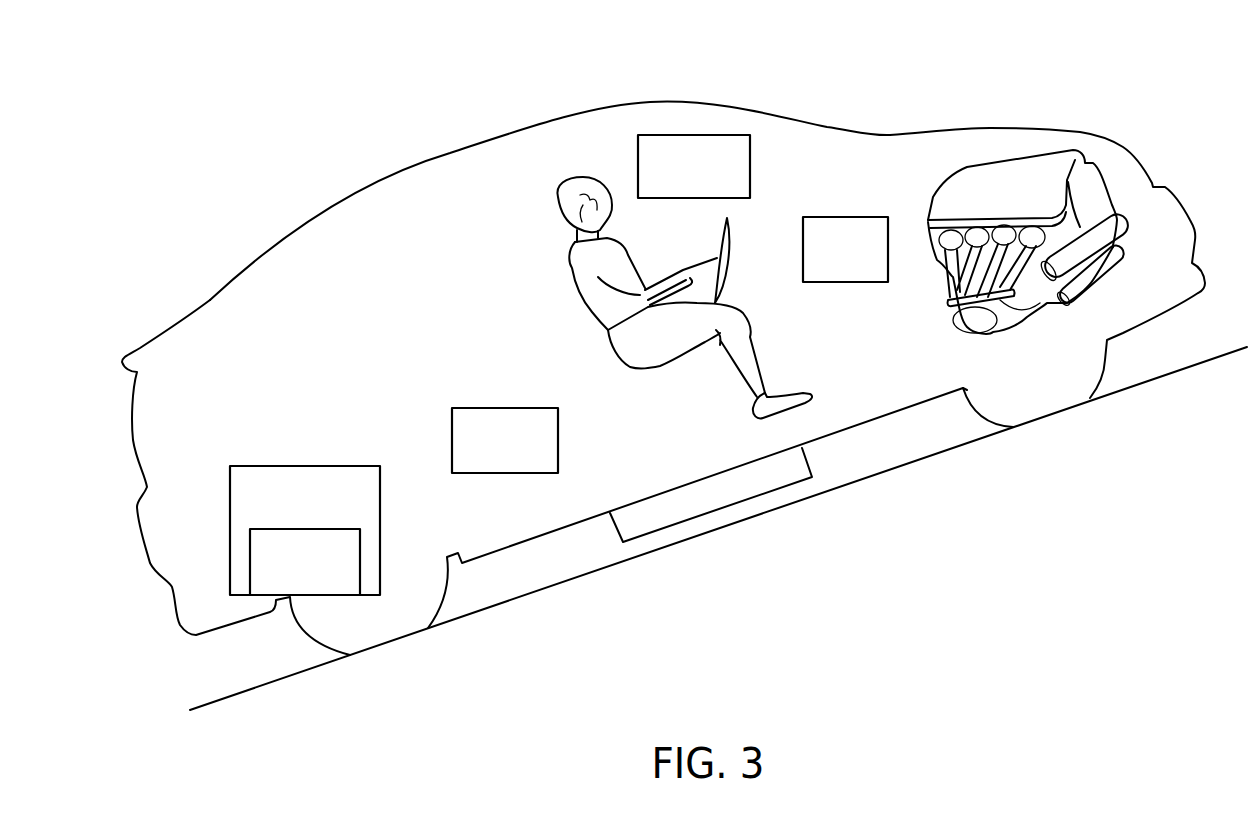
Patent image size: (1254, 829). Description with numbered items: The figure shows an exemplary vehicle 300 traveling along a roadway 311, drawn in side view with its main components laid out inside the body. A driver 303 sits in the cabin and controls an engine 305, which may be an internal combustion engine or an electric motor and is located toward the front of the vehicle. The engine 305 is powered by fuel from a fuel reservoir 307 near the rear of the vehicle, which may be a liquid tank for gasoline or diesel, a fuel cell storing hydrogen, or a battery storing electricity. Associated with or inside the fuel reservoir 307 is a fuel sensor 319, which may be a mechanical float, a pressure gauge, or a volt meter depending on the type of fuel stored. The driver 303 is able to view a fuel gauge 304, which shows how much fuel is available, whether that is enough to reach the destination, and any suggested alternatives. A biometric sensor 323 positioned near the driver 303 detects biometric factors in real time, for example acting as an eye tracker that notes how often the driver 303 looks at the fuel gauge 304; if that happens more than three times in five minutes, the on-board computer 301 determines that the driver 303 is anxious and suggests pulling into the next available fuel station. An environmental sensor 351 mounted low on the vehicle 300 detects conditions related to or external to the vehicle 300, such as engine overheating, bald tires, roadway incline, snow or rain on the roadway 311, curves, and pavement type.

The vehicle 300 is at (557, 112).
The on-board computer 301 is at (505, 410).
The driver 303 is at (560, 203).
The fuel gauge 304 is at (848, 217).
The engine 305 is at (1020, 153).
The fuel reservoir 307 is at (303, 466).
The roadway 311 is at (580, 570).
The fuel sensor 319 is at (360, 548).
The biometric sensor 323 is at (693, 133).
The environmental sensor 351 is at (757, 497).